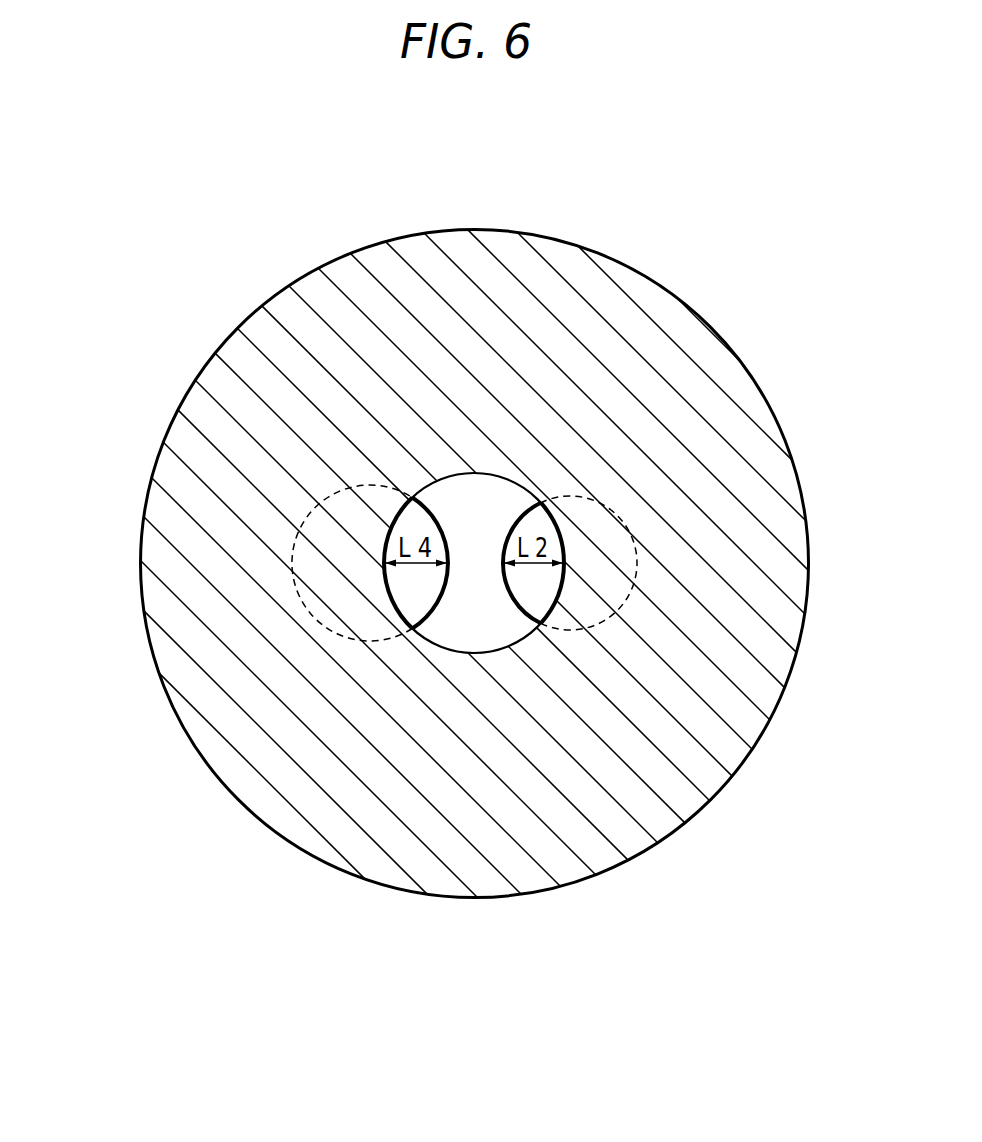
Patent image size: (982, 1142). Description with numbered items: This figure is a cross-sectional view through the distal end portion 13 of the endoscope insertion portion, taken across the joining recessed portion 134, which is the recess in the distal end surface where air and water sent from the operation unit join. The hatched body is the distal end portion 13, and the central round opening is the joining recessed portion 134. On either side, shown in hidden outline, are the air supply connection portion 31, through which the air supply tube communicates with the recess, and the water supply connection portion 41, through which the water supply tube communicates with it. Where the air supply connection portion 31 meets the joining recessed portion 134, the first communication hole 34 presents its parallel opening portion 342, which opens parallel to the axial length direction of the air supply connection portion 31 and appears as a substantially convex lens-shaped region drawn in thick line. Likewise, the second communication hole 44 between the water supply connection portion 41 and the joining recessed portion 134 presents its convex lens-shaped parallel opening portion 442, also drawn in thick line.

The distal end portion 13 is at (713, 369).
The joining recessed portion 134 is at (458, 477).
The water supply connection portion 41 is at (290, 548).
The air supply connection portion 31 is at (637, 557).
The parallel opening portion 442 is at (426, 618).
The second communication hole 44 is at (427, 731).
The parallel opening portion 342 is at (526, 618).
The first communication hole 34 is at (574, 733).